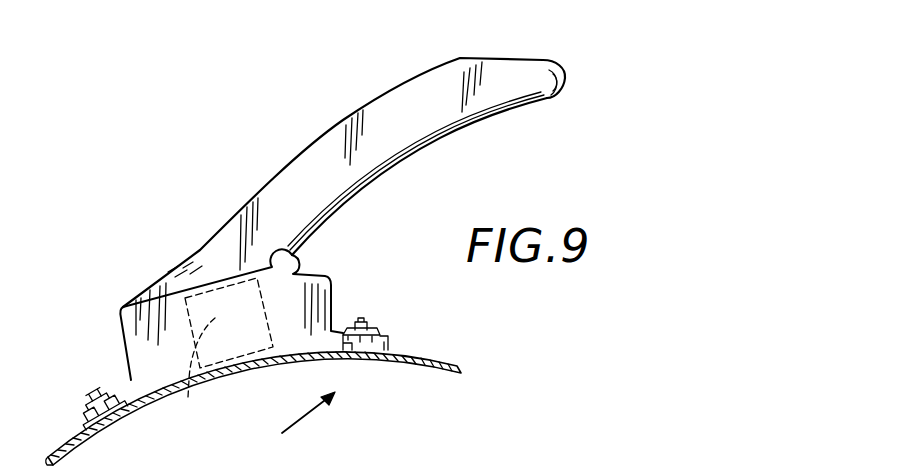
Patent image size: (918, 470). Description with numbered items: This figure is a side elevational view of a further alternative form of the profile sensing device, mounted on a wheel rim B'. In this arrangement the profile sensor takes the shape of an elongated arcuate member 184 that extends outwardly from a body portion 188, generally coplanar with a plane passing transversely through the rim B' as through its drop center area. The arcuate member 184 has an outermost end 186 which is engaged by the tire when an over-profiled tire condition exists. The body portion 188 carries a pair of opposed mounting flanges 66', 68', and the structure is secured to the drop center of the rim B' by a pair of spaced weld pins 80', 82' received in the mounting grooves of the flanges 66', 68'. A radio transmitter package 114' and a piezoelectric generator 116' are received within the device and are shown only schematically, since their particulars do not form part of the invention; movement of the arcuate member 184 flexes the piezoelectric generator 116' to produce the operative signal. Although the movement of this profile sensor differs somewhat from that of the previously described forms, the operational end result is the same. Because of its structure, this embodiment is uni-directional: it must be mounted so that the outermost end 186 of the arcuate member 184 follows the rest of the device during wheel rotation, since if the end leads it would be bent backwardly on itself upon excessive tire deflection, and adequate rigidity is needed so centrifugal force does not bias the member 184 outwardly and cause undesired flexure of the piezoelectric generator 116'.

The elongated arcuate member 184 is at (293, 185).
The outermost end 186 is at (516, 72).
The body portion 188 is at (307, 277).
The radio transmitter package 114' is at (192, 369).
The piezoelectric generator 116' is at (253, 408).
The mounting flange 66' is at (396, 336).
The weld pin 80' is at (388, 311).
The mounting flange 68' is at (83, 409).
The weld pin 82' is at (78, 383).
The rim B' is at (300, 417).